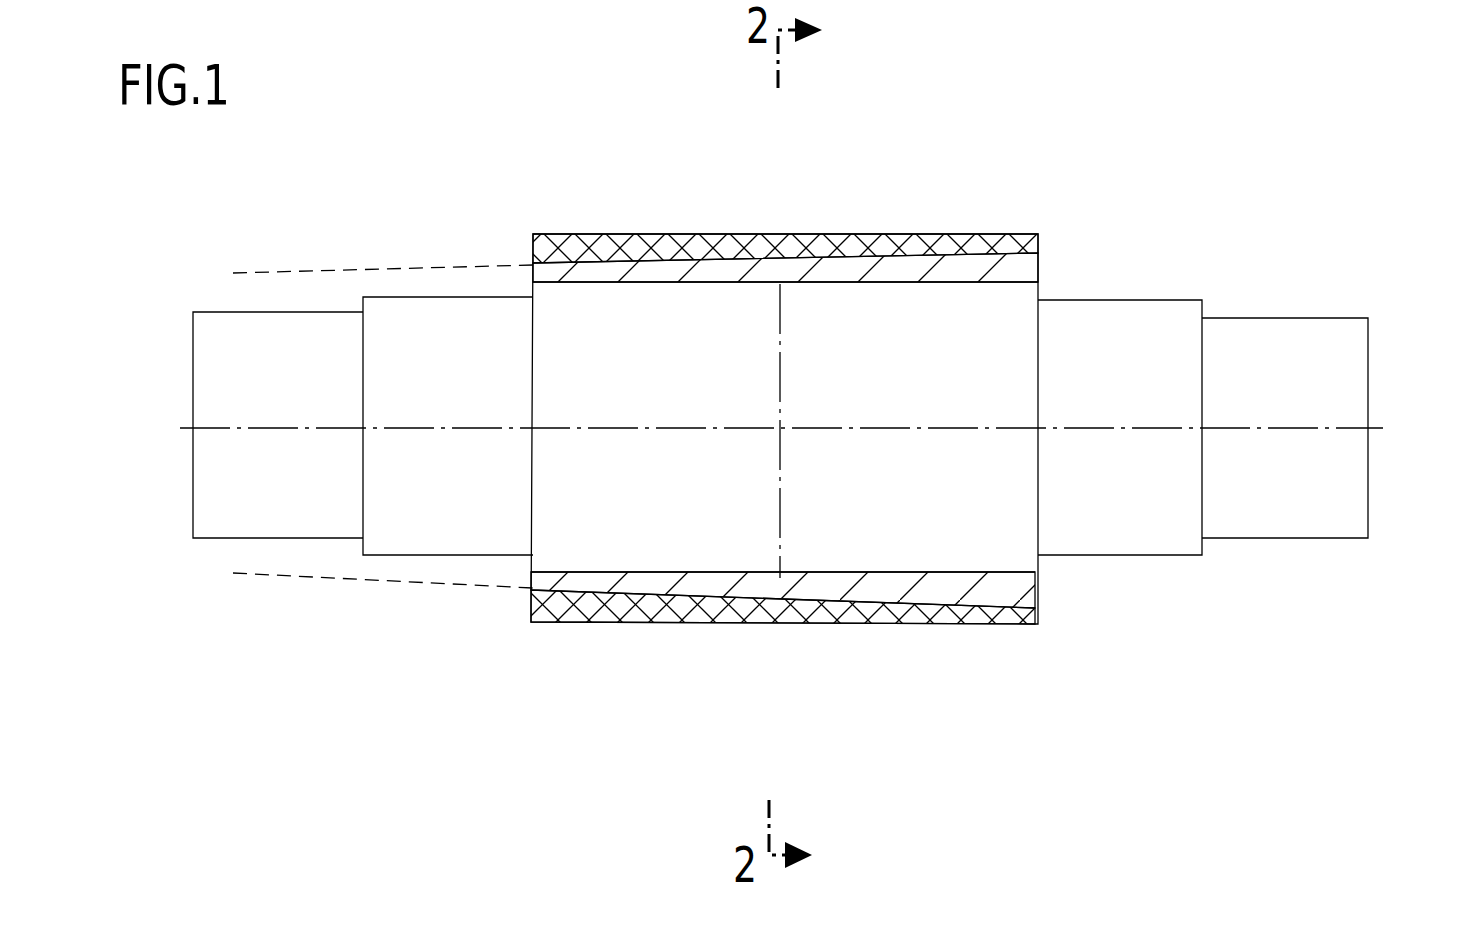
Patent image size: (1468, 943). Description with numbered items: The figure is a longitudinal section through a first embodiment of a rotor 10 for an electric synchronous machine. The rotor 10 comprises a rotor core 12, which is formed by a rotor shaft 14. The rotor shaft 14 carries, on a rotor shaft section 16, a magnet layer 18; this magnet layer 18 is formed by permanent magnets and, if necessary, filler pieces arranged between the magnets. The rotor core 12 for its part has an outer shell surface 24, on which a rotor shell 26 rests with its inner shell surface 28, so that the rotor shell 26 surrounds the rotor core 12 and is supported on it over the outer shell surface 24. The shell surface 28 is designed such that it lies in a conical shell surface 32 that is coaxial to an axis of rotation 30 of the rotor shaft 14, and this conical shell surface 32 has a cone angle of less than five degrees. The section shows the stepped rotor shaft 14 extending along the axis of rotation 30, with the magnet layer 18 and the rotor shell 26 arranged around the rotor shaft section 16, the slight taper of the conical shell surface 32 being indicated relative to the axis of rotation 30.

The rotor 10 is at (950, 190).
The rotor core 12 is at (1036, 590).
The rotor shaft 14 is at (1322, 335).
The rotor shaft section 16 is at (552, 336).
The magnet layer 18 is at (1016, 266).
The outer shell surface 24 is at (667, 597).
The rotor shell 26 is at (596, 245).
The inner shell surface 28 is at (662, 268).
The axis of rotation 30 is at (1320, 432).
The conical shell surface 32 is at (370, 590).